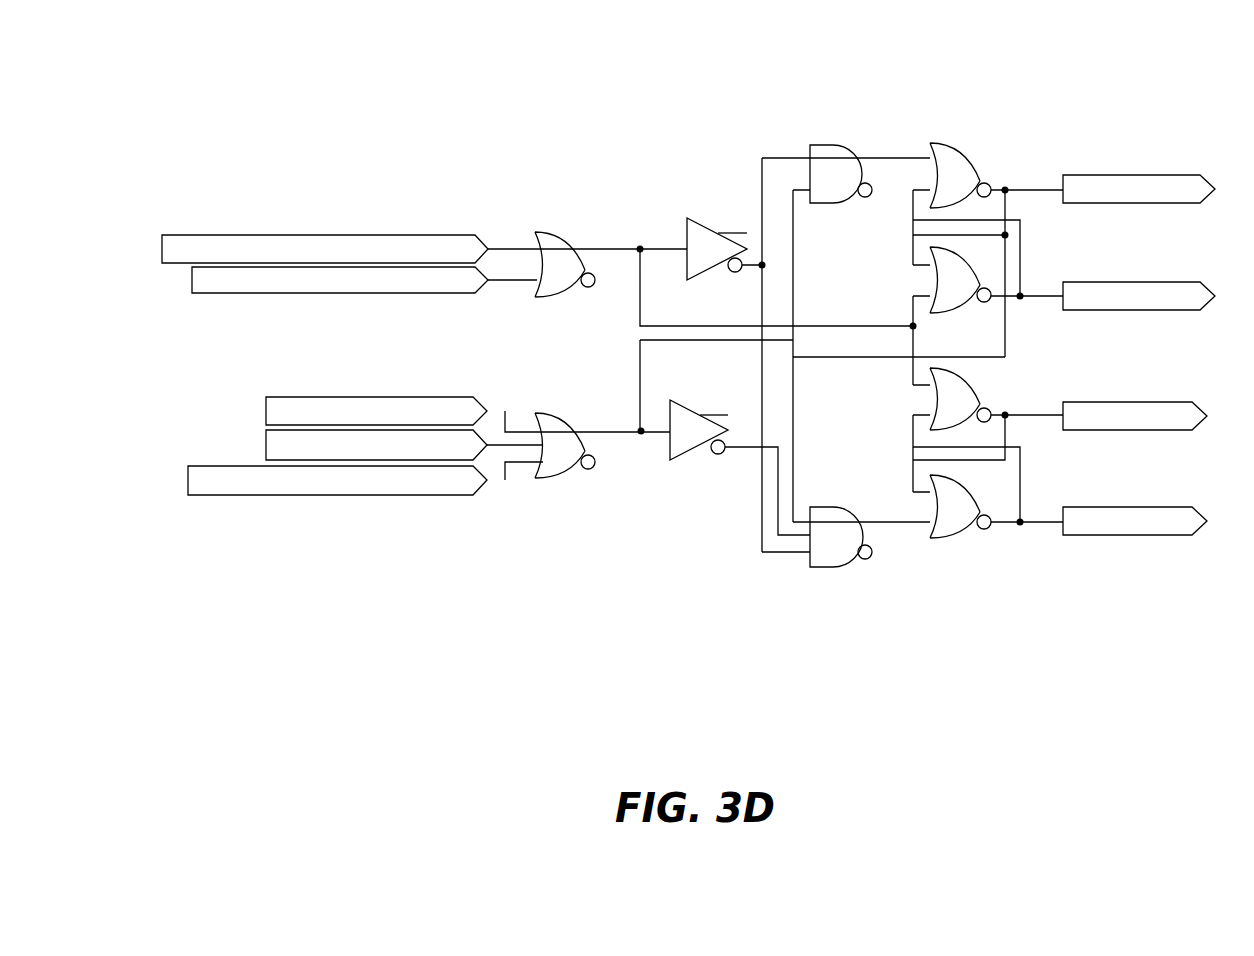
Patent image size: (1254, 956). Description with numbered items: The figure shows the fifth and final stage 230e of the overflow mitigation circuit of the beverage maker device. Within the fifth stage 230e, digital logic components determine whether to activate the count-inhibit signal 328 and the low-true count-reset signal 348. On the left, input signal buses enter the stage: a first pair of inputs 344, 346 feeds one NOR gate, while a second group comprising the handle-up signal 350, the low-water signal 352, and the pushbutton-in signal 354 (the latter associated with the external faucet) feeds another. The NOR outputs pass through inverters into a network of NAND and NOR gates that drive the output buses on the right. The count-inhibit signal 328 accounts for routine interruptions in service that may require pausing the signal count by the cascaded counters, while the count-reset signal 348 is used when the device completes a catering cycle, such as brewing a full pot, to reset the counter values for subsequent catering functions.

The fifth stage 230e is at (178, 119).
The first input signal bus 344 is at (372, 248).
The second input signal bus 346 is at (255, 280).
The handle-up signal 350 is at (373, 412).
The low-water signal 352 is at (285, 440).
The pushbutton-in signal 354 is at (305, 475).
The count-inhibit signal 328 is at (1113, 295).
The low-true count-reset signal 348 is at (1095, 412).